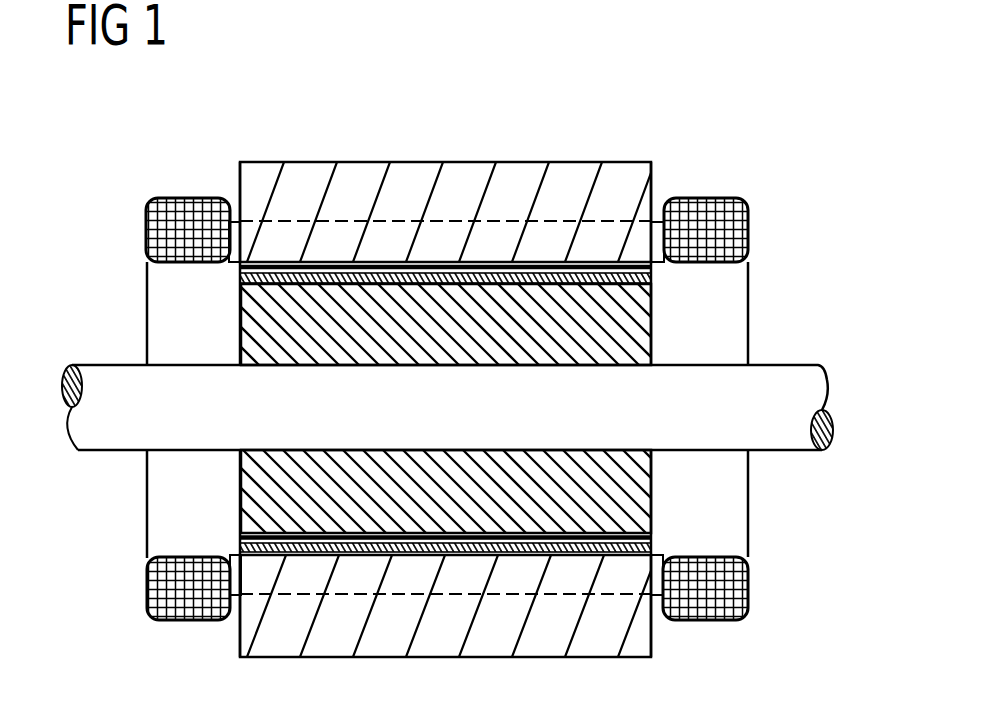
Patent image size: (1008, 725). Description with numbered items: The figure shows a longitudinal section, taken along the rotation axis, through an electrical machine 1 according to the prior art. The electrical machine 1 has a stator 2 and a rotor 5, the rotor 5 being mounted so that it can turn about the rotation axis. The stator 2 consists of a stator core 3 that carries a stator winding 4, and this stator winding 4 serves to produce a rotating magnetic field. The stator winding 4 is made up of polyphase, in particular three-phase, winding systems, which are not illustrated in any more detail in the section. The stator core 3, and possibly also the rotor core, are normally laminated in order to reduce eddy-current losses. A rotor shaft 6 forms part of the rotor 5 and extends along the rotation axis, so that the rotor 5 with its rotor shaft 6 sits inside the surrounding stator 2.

The electrical machine 1 is at (636, 114).
The stator 2 is at (470, 172).
The stator core 3 is at (259, 231).
The stator winding 4 is at (707, 198).
The rotor 5 is at (651, 331).
The rotor shaft 6 is at (822, 387).